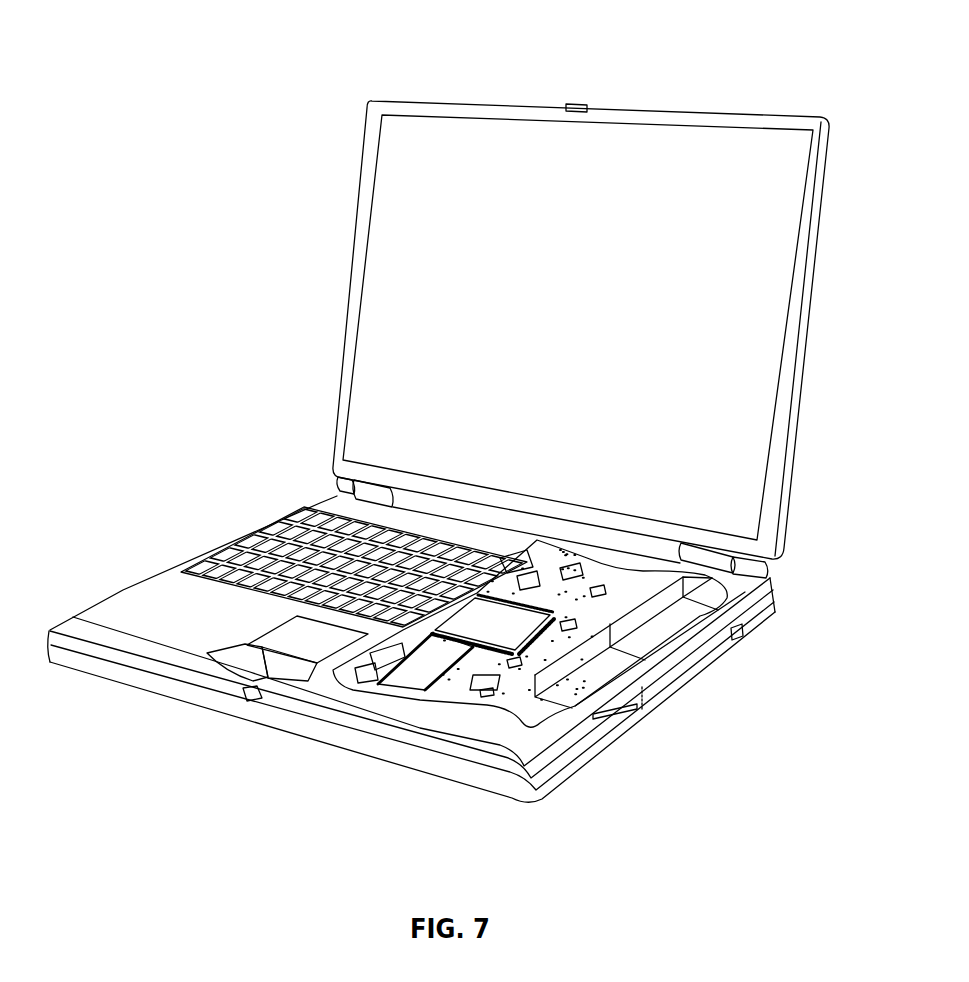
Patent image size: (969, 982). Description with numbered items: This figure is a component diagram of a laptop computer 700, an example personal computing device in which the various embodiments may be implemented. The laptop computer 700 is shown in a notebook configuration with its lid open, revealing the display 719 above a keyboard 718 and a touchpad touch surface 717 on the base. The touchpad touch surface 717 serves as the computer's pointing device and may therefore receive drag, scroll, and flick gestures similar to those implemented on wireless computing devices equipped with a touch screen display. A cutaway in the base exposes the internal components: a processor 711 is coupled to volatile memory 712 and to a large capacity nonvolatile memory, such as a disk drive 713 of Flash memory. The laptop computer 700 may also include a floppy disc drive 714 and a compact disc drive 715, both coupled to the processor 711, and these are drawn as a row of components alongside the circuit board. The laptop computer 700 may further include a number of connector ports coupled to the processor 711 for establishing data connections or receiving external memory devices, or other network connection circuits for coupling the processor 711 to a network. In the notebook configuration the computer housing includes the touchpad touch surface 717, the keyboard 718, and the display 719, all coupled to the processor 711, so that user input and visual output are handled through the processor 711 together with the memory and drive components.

The laptop computer 700 is at (738, 90).
The processor 711 is at (503, 634).
The volatile memory 712 is at (427, 672).
The disk drive 713 is at (543, 712).
The floppy disc drive 714 is at (612, 663).
The compact disc (CD) drive 715 is at (677, 608).
The touchpad touch surface 717 is at (270, 640).
The keyboard 718 is at (227, 558).
The display 719 is at (763, 497).